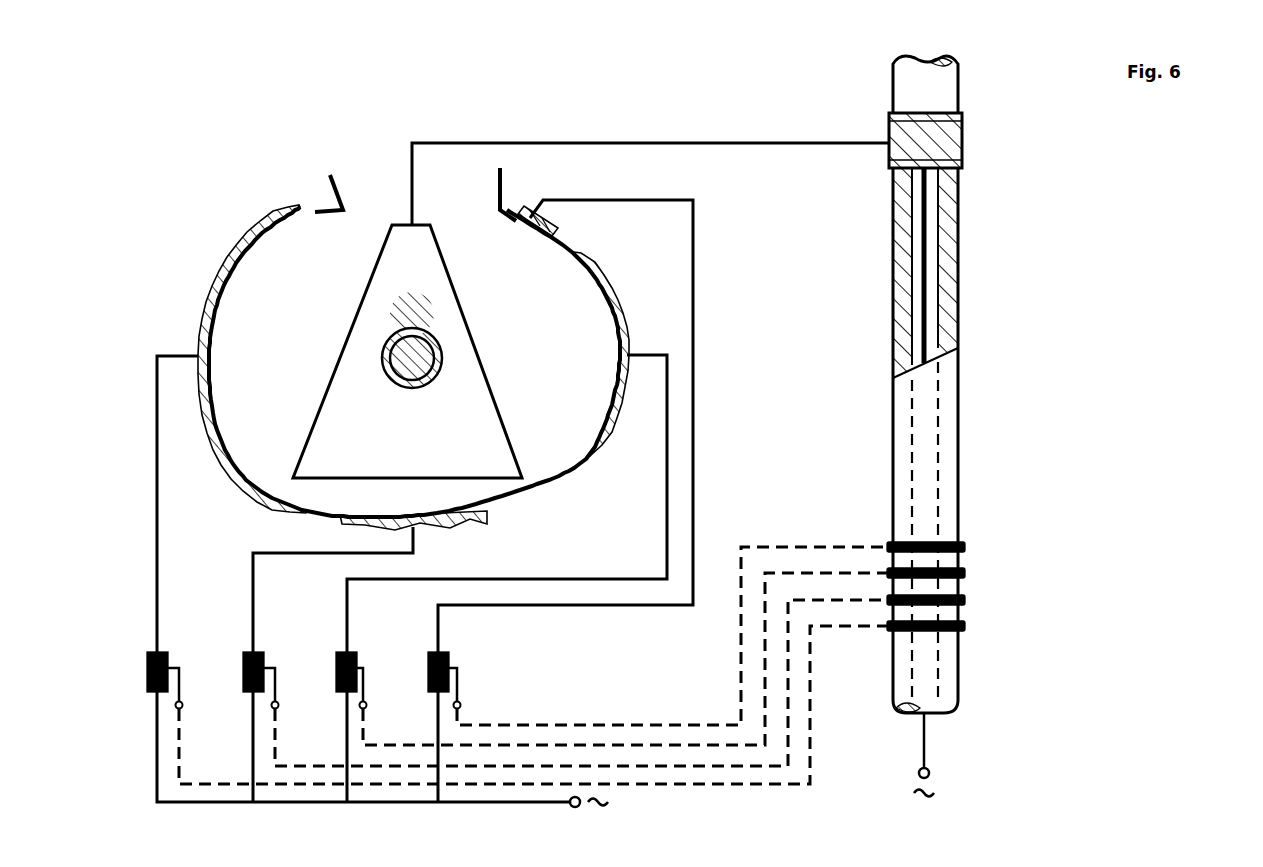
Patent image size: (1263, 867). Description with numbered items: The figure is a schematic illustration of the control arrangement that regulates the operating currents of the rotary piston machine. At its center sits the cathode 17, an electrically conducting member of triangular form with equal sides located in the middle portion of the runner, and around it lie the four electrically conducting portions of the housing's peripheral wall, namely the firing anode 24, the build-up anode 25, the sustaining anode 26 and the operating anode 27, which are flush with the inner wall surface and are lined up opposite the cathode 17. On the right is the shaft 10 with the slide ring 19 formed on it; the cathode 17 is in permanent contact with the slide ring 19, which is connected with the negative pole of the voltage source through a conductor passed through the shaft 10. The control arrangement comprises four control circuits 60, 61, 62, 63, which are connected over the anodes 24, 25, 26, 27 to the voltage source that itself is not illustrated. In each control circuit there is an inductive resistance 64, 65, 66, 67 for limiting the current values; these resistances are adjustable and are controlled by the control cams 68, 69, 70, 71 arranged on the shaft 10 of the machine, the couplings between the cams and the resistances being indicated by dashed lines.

The shaft 10 is at (893, 96).
The slide ring 19 is at (889, 128).
The cathode 17 is at (422, 274).
The firing anode 24 is at (523, 208).
The build-up anode 25 is at (600, 284).
The sustaining anode 26 is at (465, 527).
The operating anode 27 is at (287, 218).
The control circuit 60 is at (439, 626).
The control circuit 61 is at (348, 624).
The control circuit 62 is at (254, 624).
The control circuit 63 is at (158, 624).
The inductive resistance 64 is at (428, 686).
The inductive resistance 65 is at (336, 687).
The inductive resistance 66 is at (243, 687).
The inductive resistance 67 is at (147, 687).
The control cam 68 is at (965, 546).
The control cam 69 is at (965, 572).
The control cam 70 is at (965, 599).
The control cam 71 is at (965, 626).